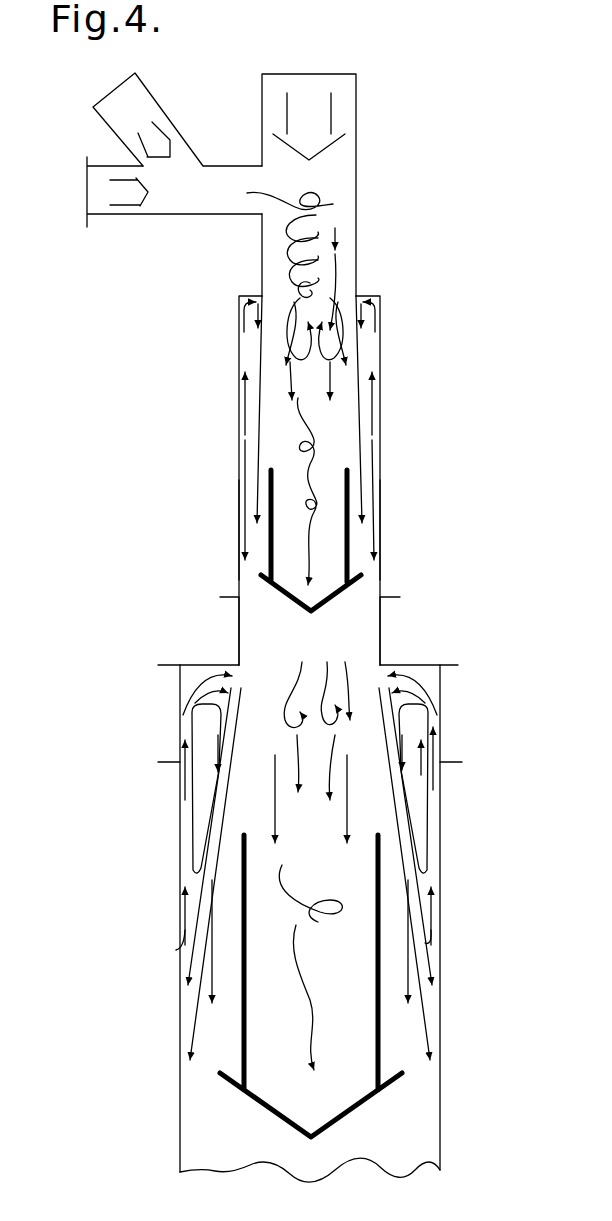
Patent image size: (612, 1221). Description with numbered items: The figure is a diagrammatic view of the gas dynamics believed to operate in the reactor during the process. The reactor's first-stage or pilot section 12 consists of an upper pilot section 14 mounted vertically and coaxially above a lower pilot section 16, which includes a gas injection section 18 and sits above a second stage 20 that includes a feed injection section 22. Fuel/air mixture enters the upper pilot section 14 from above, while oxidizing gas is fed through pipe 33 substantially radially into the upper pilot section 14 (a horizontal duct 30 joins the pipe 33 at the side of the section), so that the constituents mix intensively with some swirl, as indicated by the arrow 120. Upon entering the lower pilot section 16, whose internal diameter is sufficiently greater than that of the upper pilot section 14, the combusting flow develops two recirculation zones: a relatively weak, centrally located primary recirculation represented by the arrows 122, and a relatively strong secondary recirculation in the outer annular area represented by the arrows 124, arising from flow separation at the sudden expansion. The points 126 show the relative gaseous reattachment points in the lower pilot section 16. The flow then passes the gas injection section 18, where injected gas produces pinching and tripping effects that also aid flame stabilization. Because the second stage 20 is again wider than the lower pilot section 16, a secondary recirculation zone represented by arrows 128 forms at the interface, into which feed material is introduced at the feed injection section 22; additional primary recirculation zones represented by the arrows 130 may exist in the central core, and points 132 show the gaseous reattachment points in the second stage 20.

The first-stage or pilot section 12 is at (386, 474).
The upper pilot section 14 is at (356, 103).
The lower pilot section 16 is at (381, 527).
The gas injection section 18 is at (381, 632).
The second stage 20 is at (447, 890).
The feed injection section 22 is at (333, 713).
The air inlet duct 30 is at (172, 214).
The pipe 33 is at (150, 97).
The arrow 120 is at (333, 204).
The arrows 122 is at (318, 328).
The arrows 124 is at (240, 393).
The points 126 is at (250, 427).
The arrows 128 is at (213, 760).
The arrows 130 is at (293, 725).
The points 132 is at (188, 943).